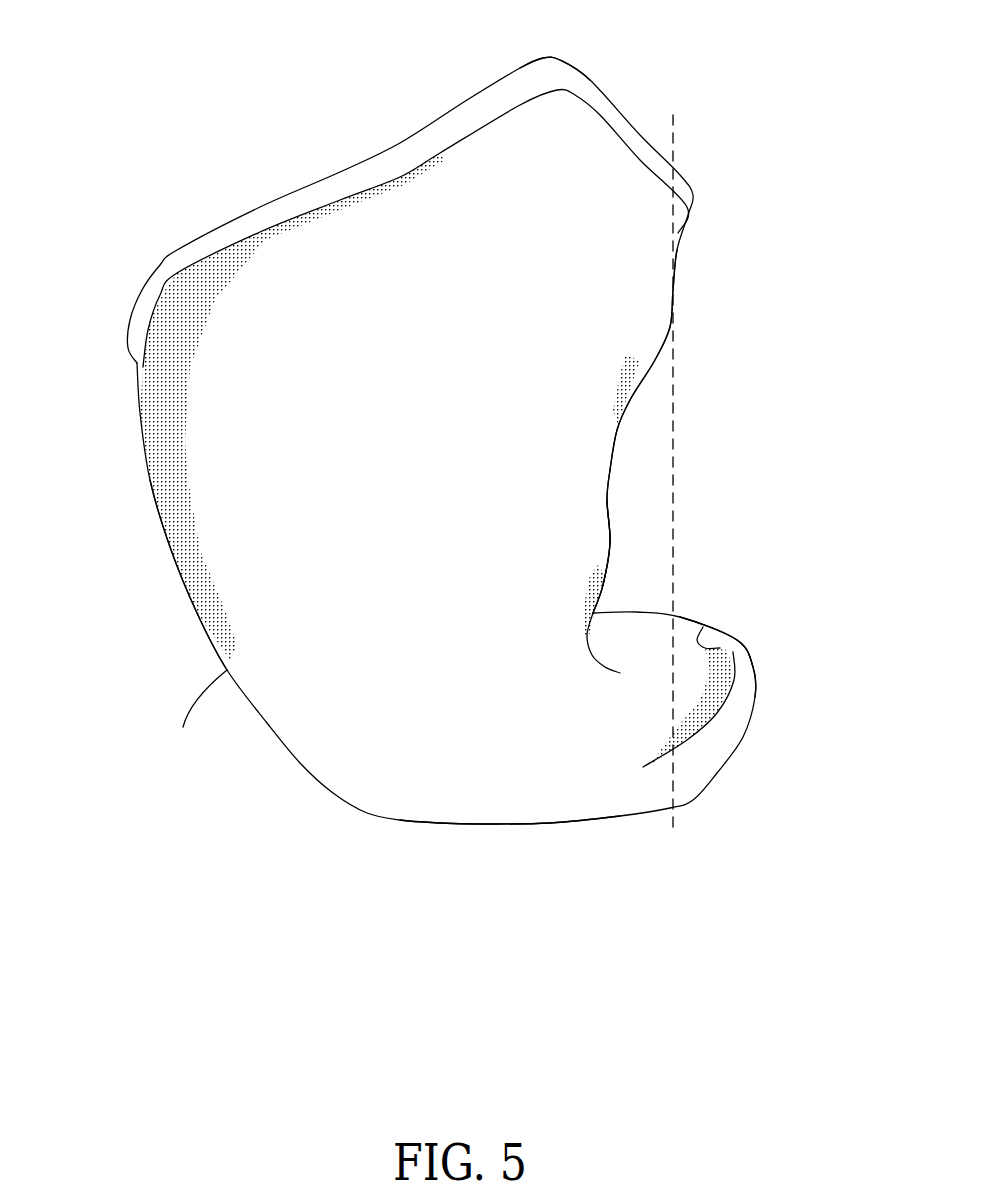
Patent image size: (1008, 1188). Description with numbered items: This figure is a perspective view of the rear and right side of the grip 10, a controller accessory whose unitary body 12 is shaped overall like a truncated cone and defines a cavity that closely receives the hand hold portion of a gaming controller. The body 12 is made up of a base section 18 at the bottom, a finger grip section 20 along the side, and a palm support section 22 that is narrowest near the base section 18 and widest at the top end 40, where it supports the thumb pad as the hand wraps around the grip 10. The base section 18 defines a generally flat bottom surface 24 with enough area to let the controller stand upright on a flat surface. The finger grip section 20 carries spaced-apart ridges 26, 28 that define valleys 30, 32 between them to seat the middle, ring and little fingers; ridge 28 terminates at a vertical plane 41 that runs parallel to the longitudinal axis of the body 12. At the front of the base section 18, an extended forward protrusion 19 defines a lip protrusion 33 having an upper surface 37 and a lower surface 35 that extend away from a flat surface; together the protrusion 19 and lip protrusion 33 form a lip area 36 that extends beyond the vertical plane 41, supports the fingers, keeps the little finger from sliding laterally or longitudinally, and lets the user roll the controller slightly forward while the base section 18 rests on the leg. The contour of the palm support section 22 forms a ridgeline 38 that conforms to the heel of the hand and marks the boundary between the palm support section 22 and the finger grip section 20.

The grip 10 is at (706, 70).
The unitary body 12 is at (177, 447).
The base section 18 is at (717, 770).
The extended forward protrusion 19 is at (757, 843).
The finger grip section 20 is at (620, 520).
The palm support section 22 is at (347, 530).
The bottom surface 24 is at (493, 823).
The ridge 26 is at (610, 543).
The ridge 28 is at (670, 337).
The valley 30 is at (593, 613).
The valley 32 is at (600, 440).
The lip protrusion 33 is at (737, 637).
The lower surface 35 is at (752, 665).
The lip area 36 is at (730, 717).
The upper surface 37 is at (700, 637).
The ridgeline 38 is at (180, 583).
The top end 40 is at (553, 62).
The vertical plane 41 is at (673, 145).